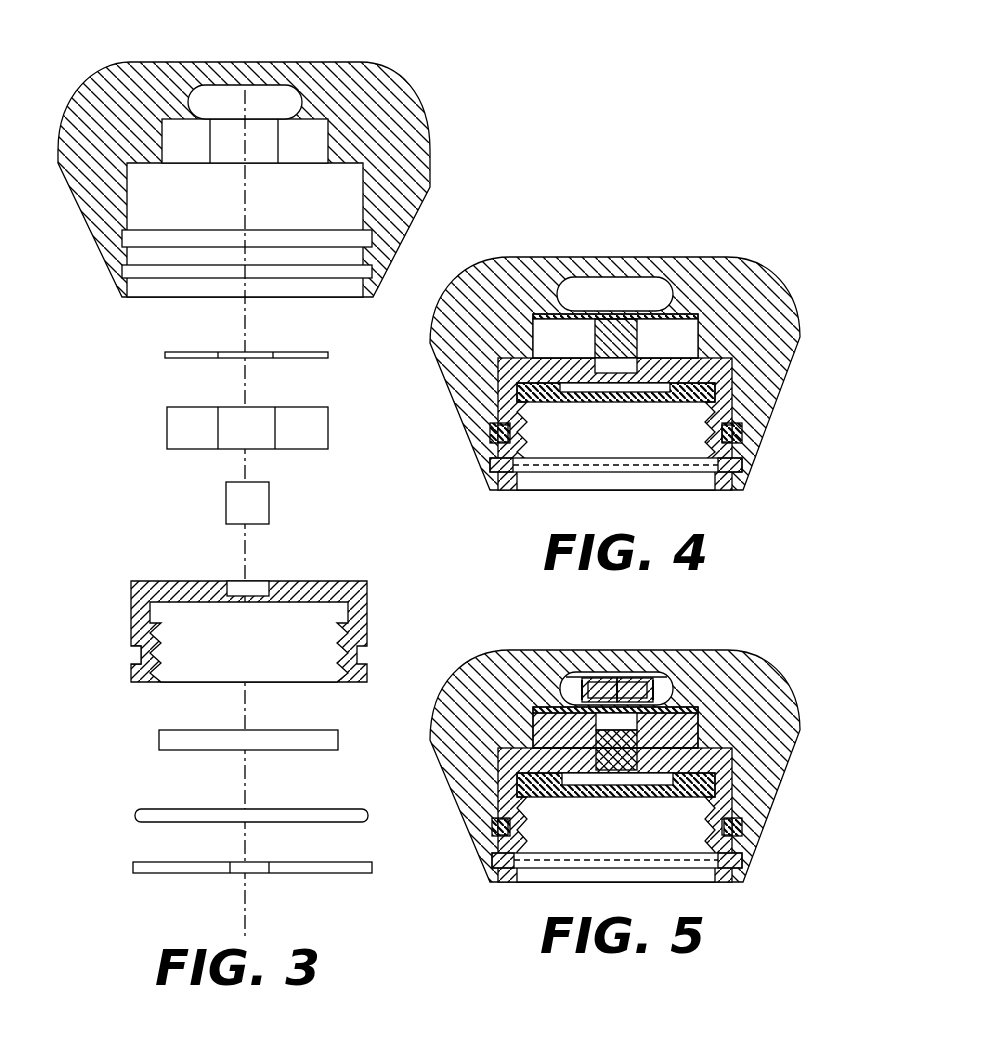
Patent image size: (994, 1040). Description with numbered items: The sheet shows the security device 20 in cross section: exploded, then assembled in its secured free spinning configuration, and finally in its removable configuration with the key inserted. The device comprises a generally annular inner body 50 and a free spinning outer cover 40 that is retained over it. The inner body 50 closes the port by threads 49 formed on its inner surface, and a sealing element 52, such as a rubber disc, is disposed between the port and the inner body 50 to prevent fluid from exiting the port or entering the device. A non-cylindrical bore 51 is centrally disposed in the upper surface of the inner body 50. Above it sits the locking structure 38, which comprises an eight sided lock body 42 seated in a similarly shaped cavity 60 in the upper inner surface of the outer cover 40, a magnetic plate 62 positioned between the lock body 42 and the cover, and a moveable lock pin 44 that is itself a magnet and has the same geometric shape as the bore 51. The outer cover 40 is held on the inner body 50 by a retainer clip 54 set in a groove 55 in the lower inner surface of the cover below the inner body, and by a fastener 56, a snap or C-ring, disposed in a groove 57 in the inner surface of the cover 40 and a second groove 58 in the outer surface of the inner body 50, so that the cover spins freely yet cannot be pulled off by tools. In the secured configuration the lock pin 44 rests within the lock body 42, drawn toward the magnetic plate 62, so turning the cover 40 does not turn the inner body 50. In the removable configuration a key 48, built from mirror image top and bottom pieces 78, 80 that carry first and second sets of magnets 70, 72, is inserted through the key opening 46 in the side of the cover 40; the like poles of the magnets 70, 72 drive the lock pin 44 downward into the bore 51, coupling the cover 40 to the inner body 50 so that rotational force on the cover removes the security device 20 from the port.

In FIG. 3, the security device 20 is at (309, 179).
In FIG. 4, the security device 20 is at (615, 345).
In FIG. 5, the security device 20 is at (642, 741).
In FIG. 3, the locking structure 38 is at (239, 415).
In FIG. 3, the outer cover 40 is at (412, 182).
In FIG. 4, the outer cover 40 is at (645, 257).
In FIG. 5, the outer cover 40 is at (770, 710).
In FIG. 3, the lock body 42 is at (313, 428).
In FIG. 4, the lock body 42 is at (673, 340).
In FIG. 5, the lock body 42 is at (683, 733).
In FIG. 3, the lock pin 44 is at (257, 504).
In FIG. 4, the lock pin 44 is at (602, 337).
In FIG. 5, the lock pin 44 is at (622, 752).
In FIG. 3, the key opening 46 is at (250, 96).
In FIG. 4, the key opening 46 is at (577, 290).
In FIG. 5, the key opening 46 is at (616, 688).
In FIG. 5, the key 48 is at (586, 680).
In FIG. 3, the threads 49 is at (158, 663).
In FIG. 4, the threads 49 is at (522, 447).
In FIG. 5, the threads 49 is at (520, 848).
In FIG. 3, the inner body 50 is at (260, 631).
In FIG. 4, the inner body 50 is at (670, 447).
In FIG. 5, the inner body 50 is at (663, 840).
In FIG. 3, the bore 51 is at (258, 592).
In FIG. 4, the bore 51 is at (620, 372).
In FIG. 3, the sealing element 52 is at (170, 740).
In FIG. 4, the sealing element 52 is at (528, 392).
In FIG. 5, the sealing element 52 is at (528, 790).
In FIG. 3, the retainer clip 54 is at (133, 868).
In FIG. 4, the retainer clip 54 is at (735, 470).
In FIG. 5, the retainer clip 54 is at (503, 858).
In FIG. 3, the groove 55 is at (365, 268).
In FIG. 5, the groove 55 is at (730, 860).
In FIG. 3, the fastener 56 is at (135, 817).
In FIG. 4, the fastener 56 is at (742, 432).
In FIG. 5, the fastener 56 is at (743, 828).
In FIG. 3, the groove 57 is at (362, 238).
In FIG. 4, the groove 57 is at (497, 440).
In FIG. 3, the second groove 58 is at (138, 656).
In FIG. 4, the second groove 58 is at (615, 433).
In FIG. 5, the second groove 58 is at (523, 848).
In FIG. 3, the cavity 60 is at (322, 133).
In FIG. 4, the cavity 60 is at (533, 333).
In FIG. 5, the cavity 60 is at (533, 722).
In FIG. 3, the magnetic plate 62 is at (305, 352).
In FIG. 4, the magnetic plate 62 is at (683, 317).
In FIG. 5, the magnetic plate 62 is at (615, 710).
In FIG. 5, the first set of magnets 70 is at (602, 678).
In FIG. 5, the second set of magnets 72 is at (630, 683).
In FIG. 5, the top piece of key 78 is at (663, 672).
In FIG. 5, the bottom piece of key 80 is at (670, 703).